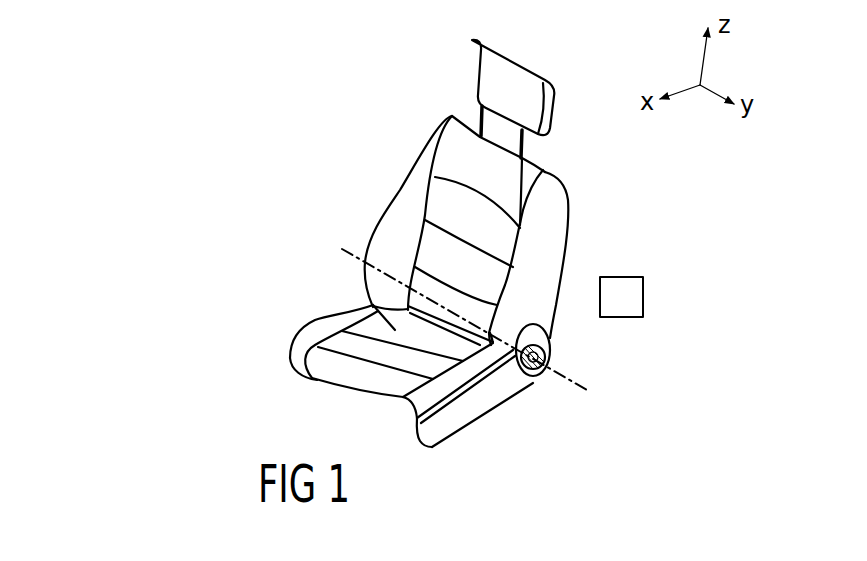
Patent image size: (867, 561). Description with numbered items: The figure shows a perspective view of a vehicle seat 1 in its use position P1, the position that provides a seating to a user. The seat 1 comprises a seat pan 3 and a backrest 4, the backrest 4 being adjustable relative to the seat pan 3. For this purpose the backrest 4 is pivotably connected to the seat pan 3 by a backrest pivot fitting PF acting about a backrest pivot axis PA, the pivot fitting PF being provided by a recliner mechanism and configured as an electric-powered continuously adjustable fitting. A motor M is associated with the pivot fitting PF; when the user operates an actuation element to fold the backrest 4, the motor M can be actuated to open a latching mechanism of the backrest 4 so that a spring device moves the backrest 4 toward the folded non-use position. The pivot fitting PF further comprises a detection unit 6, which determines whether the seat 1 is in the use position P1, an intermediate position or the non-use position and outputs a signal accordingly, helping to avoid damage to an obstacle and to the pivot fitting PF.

The seat 1 is at (386, 96).
The use position P1 is at (447, 255).
The seat pan 3 is at (335, 343).
The backrest 4 is at (435, 193).
The detection unit 6 is at (537, 378).
The motor M is at (550, 340).
The backrest pivot axis PA is at (336, 247).
The backrest pivot fitting PF is at (552, 360).